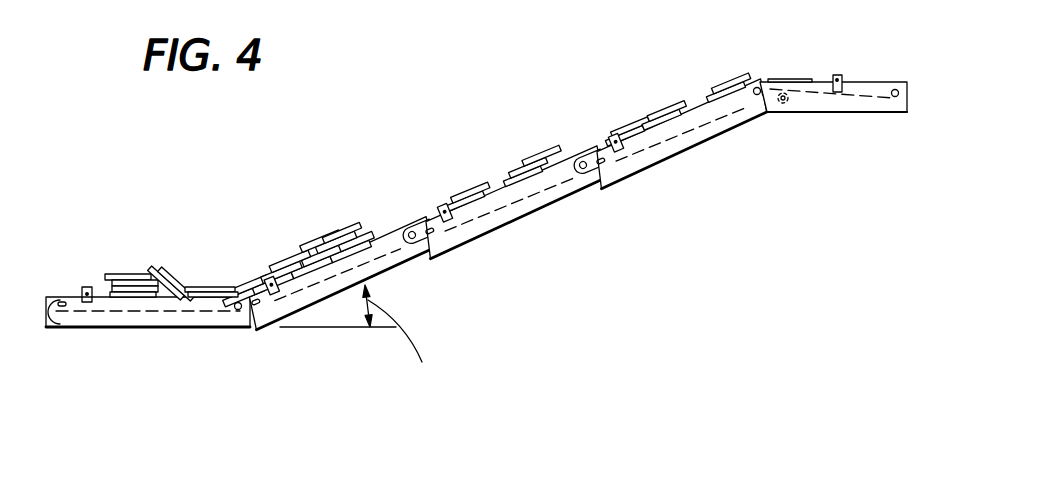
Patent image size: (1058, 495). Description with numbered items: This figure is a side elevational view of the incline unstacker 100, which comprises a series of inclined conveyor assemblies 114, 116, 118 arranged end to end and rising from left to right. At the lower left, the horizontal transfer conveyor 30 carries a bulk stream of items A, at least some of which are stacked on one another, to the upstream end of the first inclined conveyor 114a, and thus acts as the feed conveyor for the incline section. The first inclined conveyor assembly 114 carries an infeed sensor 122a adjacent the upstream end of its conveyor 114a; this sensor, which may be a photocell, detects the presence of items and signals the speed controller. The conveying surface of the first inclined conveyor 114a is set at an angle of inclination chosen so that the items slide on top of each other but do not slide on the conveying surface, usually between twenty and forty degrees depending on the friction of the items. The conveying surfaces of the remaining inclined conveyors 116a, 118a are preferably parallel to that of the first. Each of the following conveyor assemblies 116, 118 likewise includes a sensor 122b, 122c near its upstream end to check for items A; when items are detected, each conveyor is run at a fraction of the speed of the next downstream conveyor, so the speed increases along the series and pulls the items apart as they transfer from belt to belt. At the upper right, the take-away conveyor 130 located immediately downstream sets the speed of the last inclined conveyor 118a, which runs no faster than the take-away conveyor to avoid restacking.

The transfer conveyor 30 is at (152, 330).
The incline unstacker 100 is at (514, 218).
The first inclined conveyor assembly 114 is at (359, 295).
The first inclined conveyor 114a is at (405, 253).
The second inclined conveyor assembly 116 is at (515, 205).
The second inclined conveyor 116a is at (552, 188).
The third inclined conveyor assembly 118 is at (692, 136).
The last inclined conveyor 118a is at (728, 115).
The infeed sensor 122a is at (271, 302).
The sensor 122b is at (445, 205).
The sensor 122c is at (614, 135).
The take-away conveyor 130 is at (858, 80).
The items A is at (107, 275).